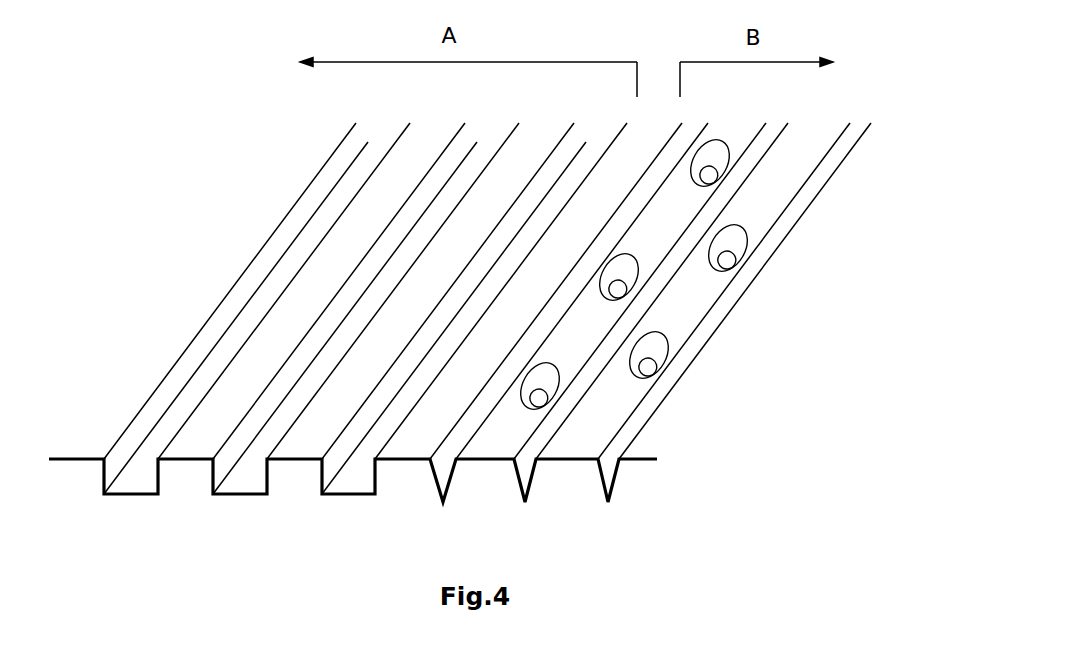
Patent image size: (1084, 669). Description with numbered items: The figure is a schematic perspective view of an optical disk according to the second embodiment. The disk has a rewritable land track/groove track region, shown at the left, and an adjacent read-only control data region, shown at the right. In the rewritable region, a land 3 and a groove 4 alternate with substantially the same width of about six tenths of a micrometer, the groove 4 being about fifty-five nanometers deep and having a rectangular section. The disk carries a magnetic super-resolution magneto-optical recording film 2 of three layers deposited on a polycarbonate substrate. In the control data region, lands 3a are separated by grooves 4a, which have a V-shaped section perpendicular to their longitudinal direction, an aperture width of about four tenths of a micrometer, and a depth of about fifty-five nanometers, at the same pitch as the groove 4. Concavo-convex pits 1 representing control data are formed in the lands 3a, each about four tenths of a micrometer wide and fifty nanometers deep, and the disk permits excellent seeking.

The concavo-convex pits 1 is at (666, 376).
The magnetic super-resolution magneto-optical recording film 2 is at (235, 508).
The land 3 is at (326, 244).
The groove 4 is at (308, 367).
The lands 3a is at (781, 194).
The grooves 4a is at (750, 294).